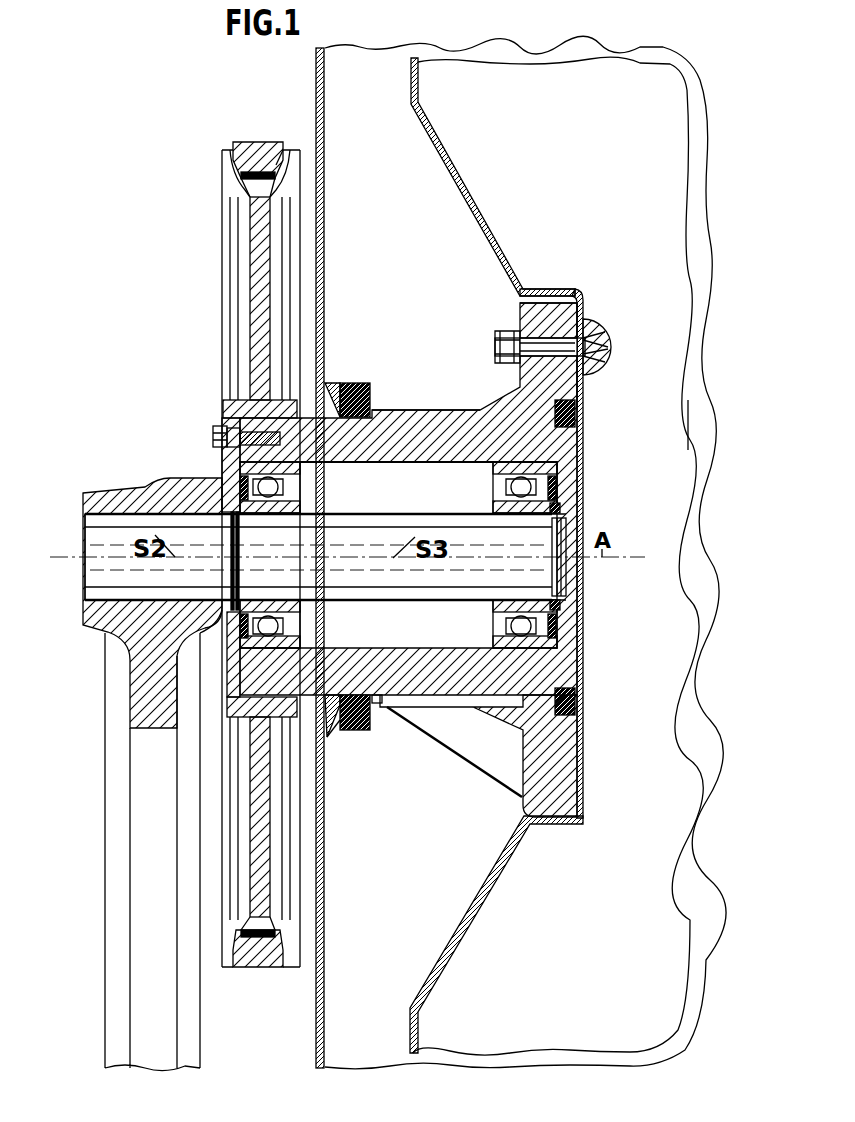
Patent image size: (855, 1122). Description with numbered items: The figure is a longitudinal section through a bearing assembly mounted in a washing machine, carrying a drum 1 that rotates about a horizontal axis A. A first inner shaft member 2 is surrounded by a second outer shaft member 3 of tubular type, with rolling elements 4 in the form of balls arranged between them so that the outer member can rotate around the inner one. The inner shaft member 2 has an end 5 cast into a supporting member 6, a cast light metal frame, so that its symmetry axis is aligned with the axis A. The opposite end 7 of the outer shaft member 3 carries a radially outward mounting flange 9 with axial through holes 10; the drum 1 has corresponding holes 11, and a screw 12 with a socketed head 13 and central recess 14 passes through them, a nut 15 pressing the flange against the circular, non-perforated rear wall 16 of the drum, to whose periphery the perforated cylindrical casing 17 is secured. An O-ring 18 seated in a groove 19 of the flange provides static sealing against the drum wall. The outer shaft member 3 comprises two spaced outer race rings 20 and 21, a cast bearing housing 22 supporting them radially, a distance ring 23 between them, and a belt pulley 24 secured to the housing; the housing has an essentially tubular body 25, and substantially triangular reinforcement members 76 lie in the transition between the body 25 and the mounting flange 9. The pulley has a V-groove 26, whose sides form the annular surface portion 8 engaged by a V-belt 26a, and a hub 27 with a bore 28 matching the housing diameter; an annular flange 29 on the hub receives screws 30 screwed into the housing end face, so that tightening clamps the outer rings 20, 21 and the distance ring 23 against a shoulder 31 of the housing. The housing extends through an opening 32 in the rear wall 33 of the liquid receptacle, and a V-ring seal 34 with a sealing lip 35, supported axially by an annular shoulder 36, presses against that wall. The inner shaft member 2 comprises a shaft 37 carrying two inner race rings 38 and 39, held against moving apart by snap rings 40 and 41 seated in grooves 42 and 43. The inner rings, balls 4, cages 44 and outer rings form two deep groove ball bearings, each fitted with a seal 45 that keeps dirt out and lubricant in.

The washing machine drum 1 is at (695, 616).
The first inner shaft member 2 is at (72, 527).
The second outer shaft member 3 is at (463, 400).
The rolling elements 4 is at (245, 480).
The end of inner shaft member 5 is at (108, 570).
The supporting member 6 is at (150, 712).
The end of outer shaft member 7 is at (553, 394).
The annular surface portion 8 is at (270, 146).
The mounting flange 9 is at (553, 312).
The axial through holes 10 is at (550, 316).
The holes in drum 11 is at (585, 335).
The screw 12 is at (603, 355).
The socketed head 13 is at (580, 333).
The central recess 14 is at (603, 343).
The nut 15 is at (500, 335).
The rear wall 16 is at (581, 455).
The casing 17 is at (665, 425).
The O-ring 18 is at (577, 710).
The groove 19 is at (575, 752).
The outer race ring 20 is at (233, 452).
The outer race ring 21 is at (553, 450).
The bearing housing 22 is at (435, 415).
The distance ring 23 is at (400, 460).
The belt pulley 24 is at (258, 230).
The tubular body 25 is at (345, 403).
The V-groove 26 is at (242, 172).
The V-belt 26a is at (268, 150).
The hub 27 is at (235, 398).
The bore 28 is at (248, 345).
The annular flange 29 is at (218, 428).
The screws 30 is at (216, 442).
The shoulder 31 is at (556, 470).
The opening 32 is at (312, 710).
The rear wall of liquid receptacle 33 is at (325, 820).
The V-ring seal 34 is at (355, 727).
The sealing lip 35 is at (328, 730).
The annular shoulder 36 is at (383, 705).
The shaft 37 is at (547, 590).
The inner race ring 38 is at (234, 522).
The inner race ring 39 is at (540, 620).
The snap ring 40 is at (110, 632).
The snap ring 41 is at (560, 510).
The groove 42 is at (231, 540).
The groove 43 is at (553, 576).
The cages 44 is at (238, 632).
The seal 45 is at (240, 497).
The reinforcement members 76 is at (577, 800).